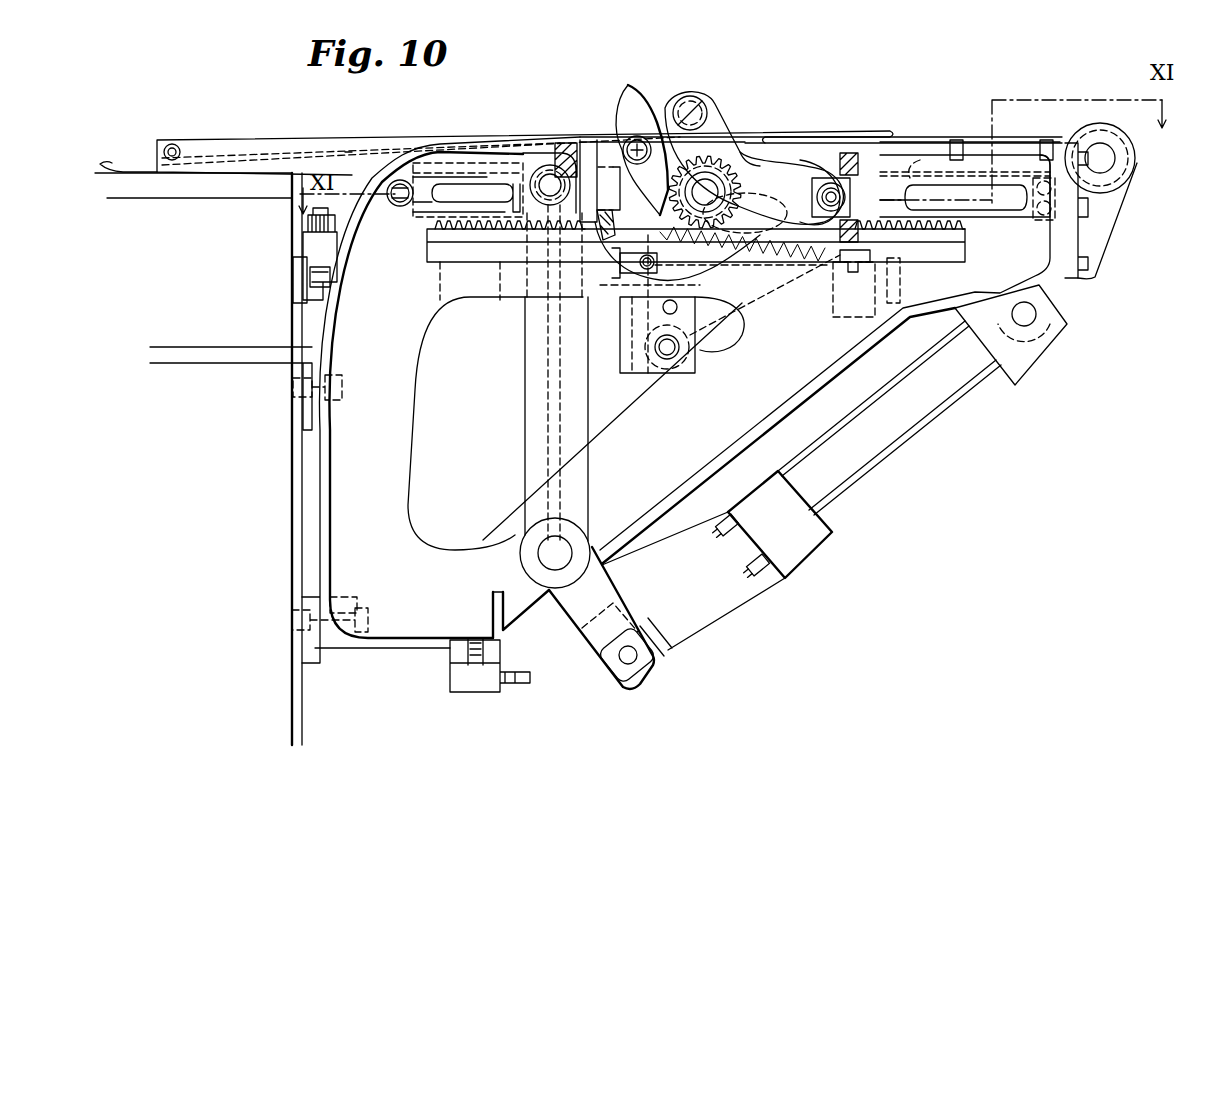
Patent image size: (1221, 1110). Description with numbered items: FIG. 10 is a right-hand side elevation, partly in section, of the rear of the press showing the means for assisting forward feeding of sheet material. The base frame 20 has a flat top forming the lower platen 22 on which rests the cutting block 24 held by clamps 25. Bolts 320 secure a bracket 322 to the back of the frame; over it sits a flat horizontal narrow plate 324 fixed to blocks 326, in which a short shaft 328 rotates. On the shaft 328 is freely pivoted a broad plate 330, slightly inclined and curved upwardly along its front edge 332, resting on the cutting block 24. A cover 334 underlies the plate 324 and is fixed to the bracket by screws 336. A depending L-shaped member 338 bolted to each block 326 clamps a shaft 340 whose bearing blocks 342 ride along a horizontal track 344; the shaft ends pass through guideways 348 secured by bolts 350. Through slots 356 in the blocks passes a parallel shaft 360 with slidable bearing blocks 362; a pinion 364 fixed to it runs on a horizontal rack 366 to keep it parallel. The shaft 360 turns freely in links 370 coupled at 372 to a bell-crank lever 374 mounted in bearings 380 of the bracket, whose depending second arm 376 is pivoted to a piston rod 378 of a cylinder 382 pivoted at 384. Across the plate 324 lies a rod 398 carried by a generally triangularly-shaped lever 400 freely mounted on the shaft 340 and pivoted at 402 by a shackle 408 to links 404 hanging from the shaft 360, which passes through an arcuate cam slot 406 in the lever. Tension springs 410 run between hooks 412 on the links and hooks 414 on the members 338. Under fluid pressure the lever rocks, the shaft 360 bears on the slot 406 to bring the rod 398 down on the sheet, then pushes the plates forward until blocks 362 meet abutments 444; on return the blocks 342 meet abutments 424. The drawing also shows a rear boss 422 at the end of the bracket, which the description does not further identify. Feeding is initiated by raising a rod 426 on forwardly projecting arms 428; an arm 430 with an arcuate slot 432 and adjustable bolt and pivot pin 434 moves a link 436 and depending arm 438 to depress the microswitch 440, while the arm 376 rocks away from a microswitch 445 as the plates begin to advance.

The base frame 20 is at (298, 547).
The lower platen 22 is at (232, 353).
The cutting block 24 is at (215, 324).
The clamps 25 is at (306, 241).
The bolts 320 is at (330, 388).
The bracket 322 is at (405, 390).
The flat horizontal narrow plate 324 is at (772, 135).
The blocks 326 is at (748, 140).
The short shaft 328 is at (640, 100).
The broad plate 330 is at (355, 150).
The front edge 332 is at (125, 170).
The cover 334 is at (603, 138).
The screws 336 is at (985, 145).
The L-shaped member 338 is at (833, 317).
The shaft 340 is at (816, 189).
The slidable bearing block 342 is at (812, 216).
The horizontal track 344 is at (915, 232).
The horizontal longitudinal guideways 348 is at (408, 215).
The bolts 350 is at (388, 207).
The slots 356 is at (640, 140).
The shaft 360 is at (735, 185).
The slidable bearing blocks 362 is at (620, 204).
The pinion 364 is at (752, 156).
The horizontal rack 366 is at (470, 256).
The links 370 is at (590, 140).
The coupling 372 is at (514, 232).
The bell-crank lever 374 is at (527, 355).
The depending second arm 376 is at (570, 617).
The piston rod 378 is at (712, 591).
The bearings 380 is at (540, 557).
The cylinder 382 is at (905, 423).
The cylinder pivot 384 is at (1036, 324).
The rod 398 is at (691, 96).
The generally triangularly-shaped lever 400 is at (722, 117).
The pivot 402 is at (658, 361).
The links 404 is at (705, 299).
The arcuate cam slot 406 is at (738, 222).
The shackle 408 is at (618, 330).
The tension springs 410 is at (782, 298).
The hooks 412 is at (640, 255).
The hooks 414 is at (810, 277).
The pivot boss 422 is at (1118, 164).
The abutments 424 is at (1020, 231).
The rod 426 is at (175, 146).
The forwardly projecting arms 428 is at (320, 128).
The arm 430 is at (620, 257).
The arcuate slot 432 is at (622, 271).
The adjustable bolt and pivot pin 434 is at (628, 296).
The link 436 is at (715, 275).
The depending arm 438 is at (898, 282).
The microswitch 440 is at (883, 320).
The abutments 444 is at (525, 150).
The microswitch 445 is at (472, 680).